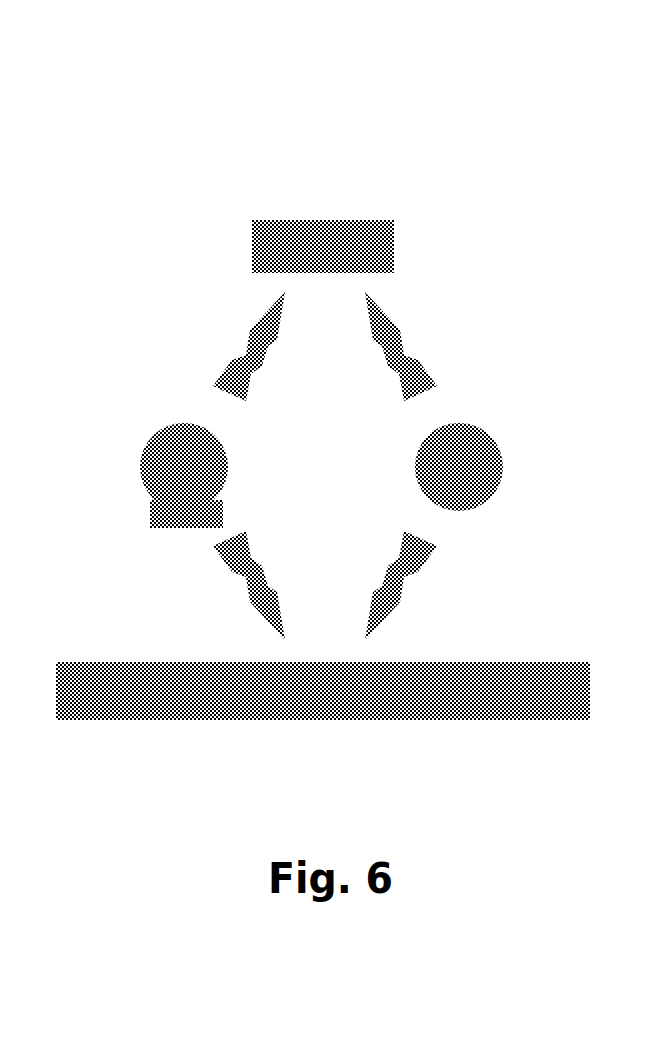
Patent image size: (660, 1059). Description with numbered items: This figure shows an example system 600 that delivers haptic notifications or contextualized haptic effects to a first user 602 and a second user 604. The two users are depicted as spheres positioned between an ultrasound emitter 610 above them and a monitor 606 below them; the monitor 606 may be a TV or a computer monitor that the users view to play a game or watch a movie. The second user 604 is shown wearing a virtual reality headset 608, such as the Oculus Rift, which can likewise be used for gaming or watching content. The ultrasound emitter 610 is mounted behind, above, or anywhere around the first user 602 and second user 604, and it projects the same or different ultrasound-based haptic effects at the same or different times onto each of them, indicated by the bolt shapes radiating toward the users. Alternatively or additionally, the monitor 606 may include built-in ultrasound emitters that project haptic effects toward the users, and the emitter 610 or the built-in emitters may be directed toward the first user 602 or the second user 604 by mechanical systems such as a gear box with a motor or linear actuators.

The system 600 is at (462, 104).
The first user 602 is at (522, 430).
The second user 604 is at (250, 430).
The monitor 606 is at (613, 657).
The virtual reality headset 608 is at (151, 518).
The ultrasound emitter 610 is at (340, 221).